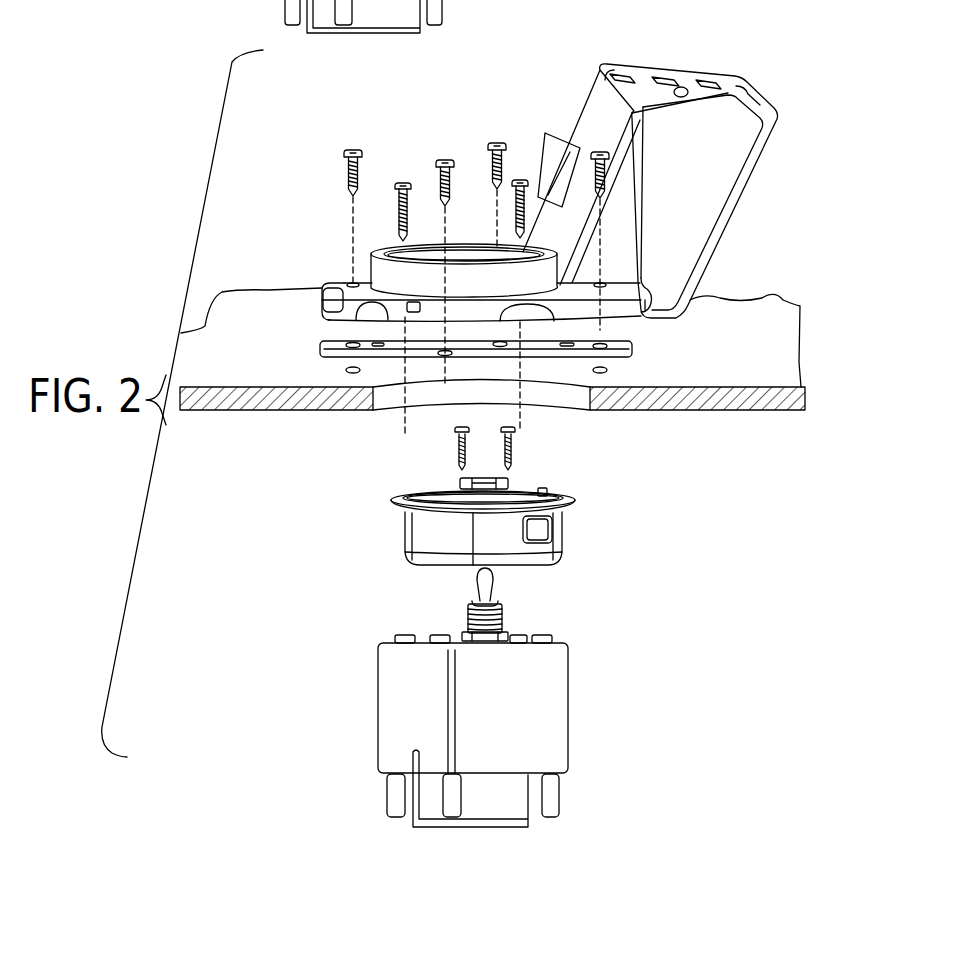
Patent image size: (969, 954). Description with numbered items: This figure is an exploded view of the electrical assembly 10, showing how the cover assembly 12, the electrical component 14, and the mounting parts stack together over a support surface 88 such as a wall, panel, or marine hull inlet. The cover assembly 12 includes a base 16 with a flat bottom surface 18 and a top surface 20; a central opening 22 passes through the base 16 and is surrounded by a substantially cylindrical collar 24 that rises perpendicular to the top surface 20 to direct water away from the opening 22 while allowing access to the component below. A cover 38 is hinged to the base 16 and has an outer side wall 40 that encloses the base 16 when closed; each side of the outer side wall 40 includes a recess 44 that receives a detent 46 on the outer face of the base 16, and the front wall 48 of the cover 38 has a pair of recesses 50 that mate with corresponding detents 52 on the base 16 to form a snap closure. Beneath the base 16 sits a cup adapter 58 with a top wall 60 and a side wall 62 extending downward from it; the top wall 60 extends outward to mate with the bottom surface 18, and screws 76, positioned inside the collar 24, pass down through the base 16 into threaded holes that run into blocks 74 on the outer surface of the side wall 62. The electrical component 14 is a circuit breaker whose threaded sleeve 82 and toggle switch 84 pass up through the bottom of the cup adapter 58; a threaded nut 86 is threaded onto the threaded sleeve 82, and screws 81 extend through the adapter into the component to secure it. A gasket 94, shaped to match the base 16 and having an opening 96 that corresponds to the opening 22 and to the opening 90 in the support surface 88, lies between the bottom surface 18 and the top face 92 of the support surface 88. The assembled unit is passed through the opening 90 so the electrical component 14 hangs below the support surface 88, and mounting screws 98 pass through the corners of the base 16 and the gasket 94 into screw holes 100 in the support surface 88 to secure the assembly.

The electrical assembly 10 is at (776, 76).
The cover assembly 12 is at (585, 71).
The electrical component 14 is at (592, 707).
The base 16 is at (300, 299).
The bottom surface 18 is at (350, 322).
The top surface 20 is at (342, 280).
The opening 22 is at (471, 242).
The collar 24 is at (600, 283).
The cover 38 is at (733, 217).
The outer side wall 40 is at (668, 170).
The recess 44 is at (680, 86).
The detent 46 is at (370, 318).
The front wall 48 is at (640, 62).
The recesses 50 is at (609, 63).
The detent 52 is at (323, 288).
The cup adapter 58 is at (378, 493).
The top wall 60 is at (568, 505).
The side wall 62 is at (405, 528).
The blocks 74 is at (550, 528).
The screws 76 is at (400, 172).
The screws 81 is at (453, 447).
The threaded sleeve 82 is at (505, 615).
The toggle switch 84 is at (500, 580).
The threaded nut 86 is at (512, 480).
The support surface 88 is at (800, 364).
The opening 90 is at (390, 403).
The top face 92 is at (765, 306).
The gasket 94 is at (632, 352).
The opening 96 is at (543, 347).
The mounting screws 98 is at (340, 158).
The screw holes 100 is at (343, 370).